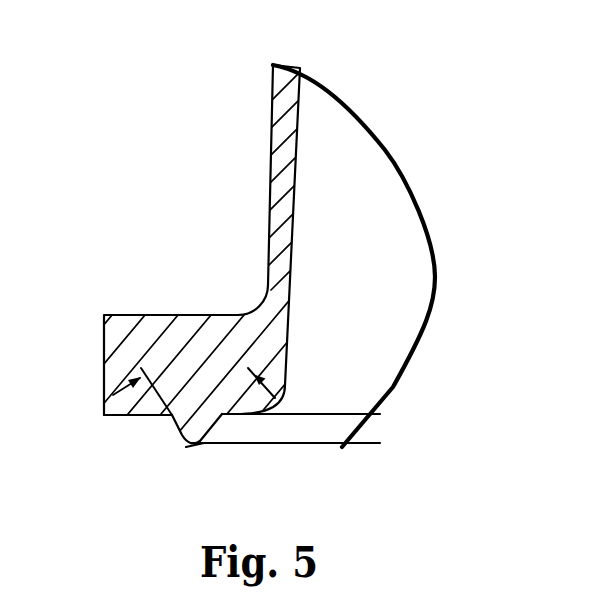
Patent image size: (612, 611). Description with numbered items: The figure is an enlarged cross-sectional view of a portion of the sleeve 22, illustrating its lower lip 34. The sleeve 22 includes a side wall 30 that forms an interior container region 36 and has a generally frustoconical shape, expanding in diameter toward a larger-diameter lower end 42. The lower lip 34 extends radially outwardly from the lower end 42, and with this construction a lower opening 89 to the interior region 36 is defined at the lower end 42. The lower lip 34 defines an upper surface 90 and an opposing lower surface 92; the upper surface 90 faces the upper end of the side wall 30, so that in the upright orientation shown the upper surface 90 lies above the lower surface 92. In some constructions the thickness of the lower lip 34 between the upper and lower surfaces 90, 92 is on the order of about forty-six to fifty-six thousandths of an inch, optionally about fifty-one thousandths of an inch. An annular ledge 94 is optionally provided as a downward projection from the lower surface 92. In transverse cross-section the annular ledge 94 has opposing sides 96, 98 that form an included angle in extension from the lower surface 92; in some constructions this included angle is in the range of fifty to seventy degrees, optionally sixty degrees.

The sleeve 22 is at (405, 63).
The side wall 30 is at (258, 177).
The lower lip 34 is at (150, 308).
The interior container region 36 is at (383, 222).
The lower end 42 is at (285, 390).
The lower opening 89 is at (338, 417).
The upper surface 90 is at (190, 315).
The lower surface 92 is at (133, 416).
The annular ledge 94 is at (201, 455).
The side of annular ledge 96 is at (217, 422).
The side of annular ledge 98 is at (173, 440).